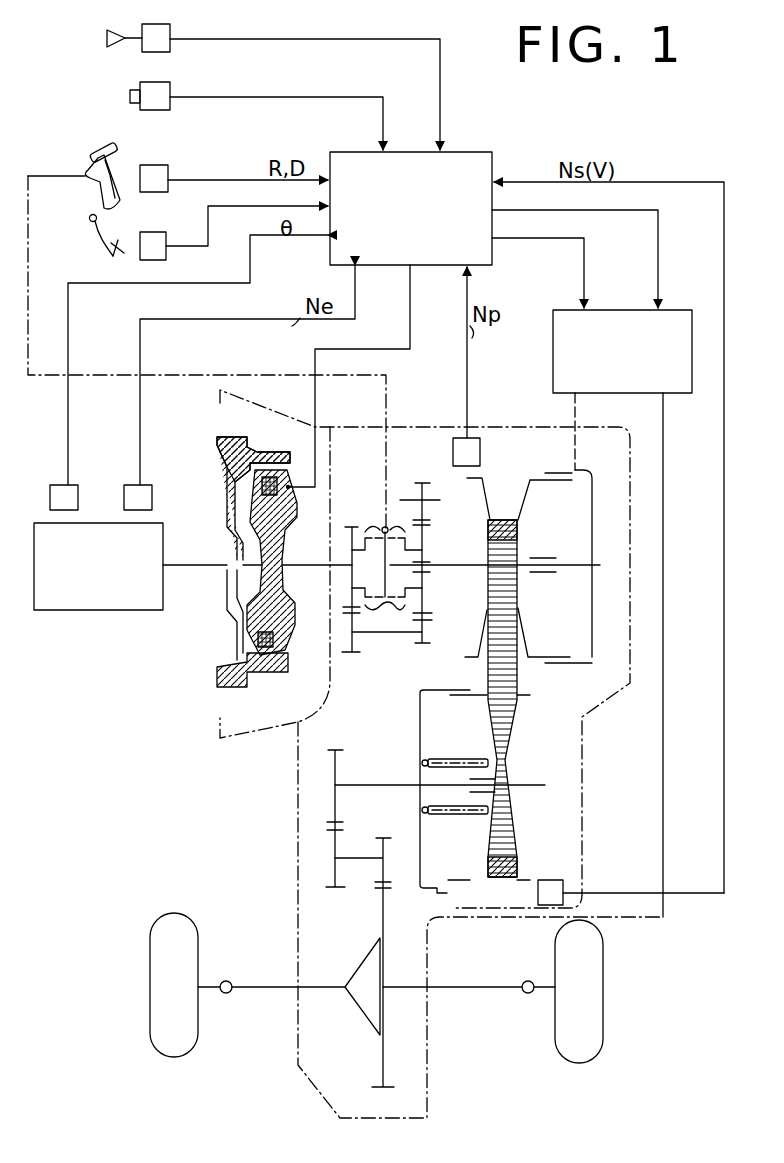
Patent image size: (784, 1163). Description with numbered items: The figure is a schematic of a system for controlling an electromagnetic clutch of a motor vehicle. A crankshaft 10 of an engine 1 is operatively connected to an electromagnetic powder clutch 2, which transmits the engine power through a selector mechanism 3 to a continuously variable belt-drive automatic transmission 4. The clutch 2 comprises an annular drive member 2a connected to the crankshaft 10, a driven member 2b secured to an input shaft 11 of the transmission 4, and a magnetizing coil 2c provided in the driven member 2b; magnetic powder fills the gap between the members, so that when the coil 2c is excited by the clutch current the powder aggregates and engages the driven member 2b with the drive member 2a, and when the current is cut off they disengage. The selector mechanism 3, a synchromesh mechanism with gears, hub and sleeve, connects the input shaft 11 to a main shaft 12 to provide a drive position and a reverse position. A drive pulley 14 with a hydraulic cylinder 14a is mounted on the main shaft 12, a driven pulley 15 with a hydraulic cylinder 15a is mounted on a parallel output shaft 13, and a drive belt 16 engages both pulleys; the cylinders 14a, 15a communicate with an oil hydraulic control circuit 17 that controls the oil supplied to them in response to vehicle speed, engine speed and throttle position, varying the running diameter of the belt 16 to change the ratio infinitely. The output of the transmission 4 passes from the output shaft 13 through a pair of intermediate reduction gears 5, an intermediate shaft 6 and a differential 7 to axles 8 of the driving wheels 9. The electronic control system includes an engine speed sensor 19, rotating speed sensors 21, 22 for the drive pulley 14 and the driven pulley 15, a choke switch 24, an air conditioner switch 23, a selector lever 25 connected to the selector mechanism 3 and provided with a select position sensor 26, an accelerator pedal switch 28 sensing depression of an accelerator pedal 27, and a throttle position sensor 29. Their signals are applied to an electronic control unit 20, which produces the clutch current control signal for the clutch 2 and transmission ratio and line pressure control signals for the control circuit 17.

The engine 1 is at (62, 612).
The electromagnetic powder clutch 2 is at (246, 560).
The annular drive member 2a is at (217, 450).
The driven member 2b is at (288, 520).
The magnetizing coil 2c is at (277, 476).
The selector mechanism 3 is at (370, 522).
The continuously variable belt-drive automatic transmission 4 is at (540, 554).
The intermediate reduction gears 5 is at (337, 750).
The intermediate shaft 6 is at (352, 858).
The differential 7 is at (362, 952).
The axles 8 is at (268, 986).
The vehicle driving wheels 9 is at (198, 1026).
The crankshaft 10 is at (214, 568).
The input shaft 11 is at (308, 568).
The main shaft 12 is at (470, 574).
The output shaft 13 is at (386, 777).
The drive pulley 14 is at (482, 520).
The hydraulic cylinder 14a is at (584, 537).
The driven pulley 15 is at (468, 791).
The hydraulic cylinder 15a is at (422, 712).
The drive belt 16 is at (487, 668).
The oil hydraulic control circuit 17 is at (553, 348).
The engine speed sensor 19 is at (130, 480).
The electronic control unit 20 is at (490, 156).
The rotating speed sensor 21 is at (480, 456).
The rotating speed sensor 22 is at (560, 872).
The air conditioner switch 23 is at (170, 89).
The choke switch 24 is at (170, 28).
The selector lever 25 is at (92, 158).
The select position sensor 26 is at (168, 170).
The accelerator pedal 27 is at (96, 246).
The accelerator pedal switch 28 is at (166, 238).
The throttle position sensor 29 is at (56, 480).